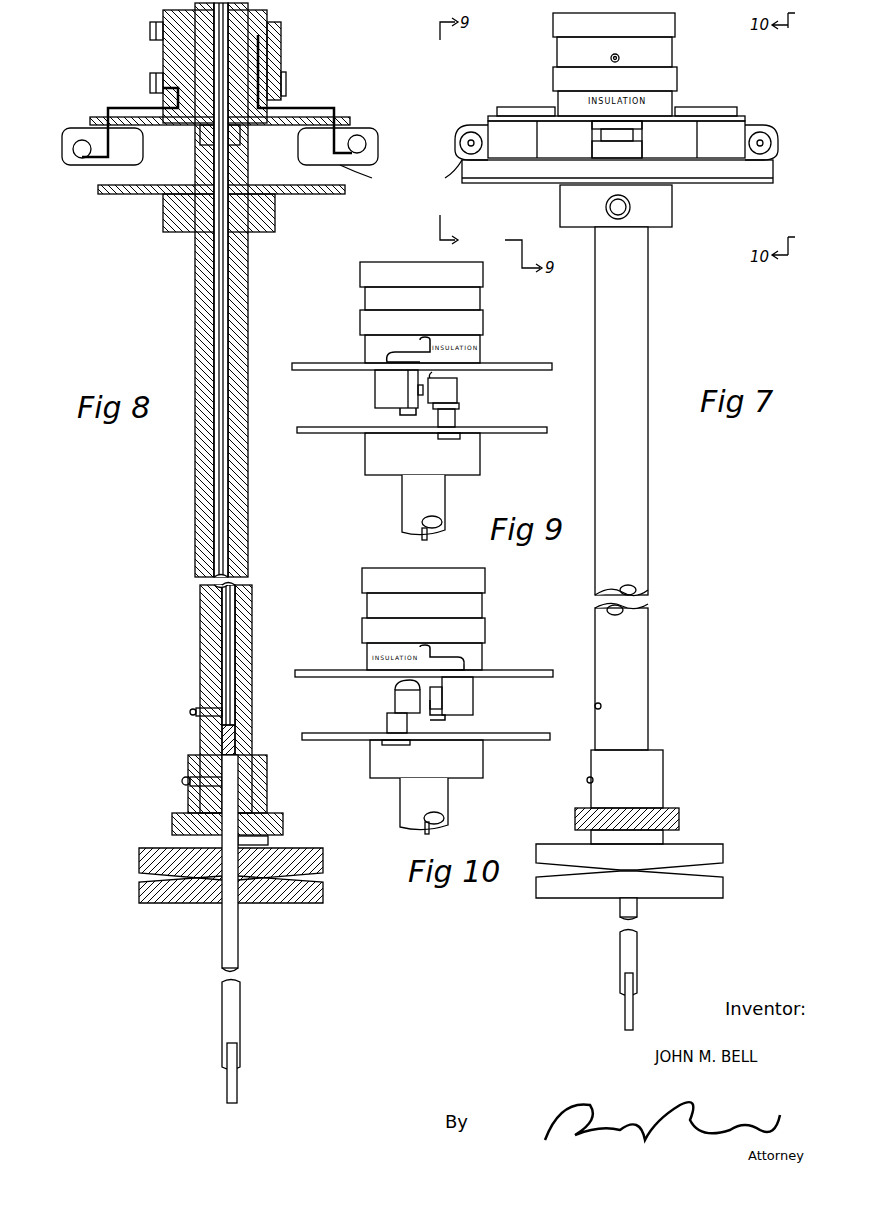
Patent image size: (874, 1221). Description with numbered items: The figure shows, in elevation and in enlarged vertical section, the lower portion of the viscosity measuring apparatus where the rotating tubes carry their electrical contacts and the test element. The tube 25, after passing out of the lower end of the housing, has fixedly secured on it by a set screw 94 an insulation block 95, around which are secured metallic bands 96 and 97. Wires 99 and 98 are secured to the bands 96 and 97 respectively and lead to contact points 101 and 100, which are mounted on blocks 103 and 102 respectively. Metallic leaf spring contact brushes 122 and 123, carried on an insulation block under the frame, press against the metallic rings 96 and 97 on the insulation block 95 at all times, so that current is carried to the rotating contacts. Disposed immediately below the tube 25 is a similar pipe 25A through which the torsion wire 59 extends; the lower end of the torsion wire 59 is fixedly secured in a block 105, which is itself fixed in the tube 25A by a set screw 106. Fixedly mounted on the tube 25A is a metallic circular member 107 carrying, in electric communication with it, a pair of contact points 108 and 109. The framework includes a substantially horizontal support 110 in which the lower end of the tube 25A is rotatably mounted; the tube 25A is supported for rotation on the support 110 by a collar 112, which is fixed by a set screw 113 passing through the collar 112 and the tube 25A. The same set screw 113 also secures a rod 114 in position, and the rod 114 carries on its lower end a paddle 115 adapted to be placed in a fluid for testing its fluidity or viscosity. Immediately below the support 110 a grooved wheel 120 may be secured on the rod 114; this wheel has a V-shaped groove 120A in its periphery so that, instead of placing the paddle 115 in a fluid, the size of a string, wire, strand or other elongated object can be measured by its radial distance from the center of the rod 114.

In FIG. 8, the tube 25 is at (240, 130).
In FIG. 8, the pipe 25A is at (248, 342).
In FIG. 7, the pipe 25A is at (648, 445).
In FIG. 9, the pipe 25A is at (445, 500).
In FIG. 10, the pipe 25A is at (448, 805).
In FIG. 8, the torsion wire 59 is at (224, 500).
In FIG. 7, the torsion wire 59 is at (636, 594).
In FIG. 9, the torsion wire 59 is at (427, 535).
In FIG. 10, the torsion wire 59 is at (429, 832).
In FIG. 7, the set screw 94 is at (611, 57).
In FIG. 8, the insulation block 95 is at (268, 12).
In FIG. 7, the insulation block 95 is at (672, 55).
In FIG. 9, the insulation block 95 is at (480, 300).
In FIG. 10, the insulation block 95 is at (482, 605).
In FIG. 8, the metallic band 96 is at (281, 35).
In FIG. 7, the metallic band 96 is at (675, 25).
In FIG. 9, the metallic band 96 is at (483, 275).
In FIG. 10, the metallic band 96 is at (485, 575).
In FIG. 8, the metallic band 97 is at (286, 82).
In FIG. 7, the metallic band 97 is at (677, 80).
In FIG. 9, the metallic band 97 is at (483, 322).
In FIG. 10, the metallic band 97 is at (485, 630).
In FIG. 8, the wire 98 is at (112, 92).
In FIG. 7, the wire 98 is at (505, 107).
In FIG. 9, the wire 98 is at (387, 352).
In FIG. 8, the wire 99 is at (334, 108).
In FIG. 7, the wire 99 is at (730, 107).
In FIG. 10, the wire 99 is at (464, 662).
In FIG. 8, the contact point 100 is at (73, 149).
In FIG. 9, the contact point 100 is at (400, 415).
In FIG. 8, the contact point 101 is at (366, 144).
In FIG. 10, the contact point 101 is at (445, 720).
In FIG. 8, the block 102 is at (115, 165).
In FIG. 7, the block 102 is at (470, 125).
In FIG. 9, the block 102 is at (375, 392).
In FIG. 8, the block 103 is at (371, 177).
In FIG. 7, the block 103 is at (765, 125).
In FIG. 10, the block 103 is at (473, 695).
In FIG. 8, the block 105 is at (235, 742).
In FIG. 8, the set screw 106 is at (192, 716).
In FIG. 7, the set screw 106 is at (595, 706).
In FIG. 8, the metallic circular member 107 is at (290, 195).
In FIG. 7, the metallic circular member 107 is at (672, 210).
In FIG. 9, the metallic circular member 107 is at (480, 462).
In FIG. 10, the metallic circular member 107 is at (483, 762).
In FIG. 7, the contact point 108 is at (445, 174).
In FIG. 9, the contact point 108 is at (440, 372).
In FIG. 7, the contact point 109 is at (773, 170).
In FIG. 10, the contact point 109 is at (398, 680).
In FIG. 8, the horizontal support 110 is at (283, 828).
In FIG. 7, the horizontal support 110 is at (679, 820).
In FIG. 8, the collar 112 is at (267, 795).
In FIG. 7, the collar 112 is at (663, 770).
In FIG. 8, the set screw 113 is at (182, 781).
In FIG. 7, the set screw 113 is at (587, 780).
In FIG. 8, the rod 114 is at (238, 940).
In FIG. 7, the rod 114 is at (637, 908).
In FIG. 8, the paddle 115 is at (237, 1080).
In FIG. 7, the paddle 115 is at (633, 1012).
In FIG. 8, the grooved wheel 120 is at (323, 880).
In FIG. 7, the grooved wheel 120 is at (723, 853).
In FIG. 8, the V-shaped groove 120A is at (139, 878).
In FIG. 7, the V-shaped groove 120A is at (723, 872).
In FIG. 8, the leaf spring contact brush 122 is at (150, 31).
In FIG. 8, the leaf spring contact brush 123 is at (150, 84).